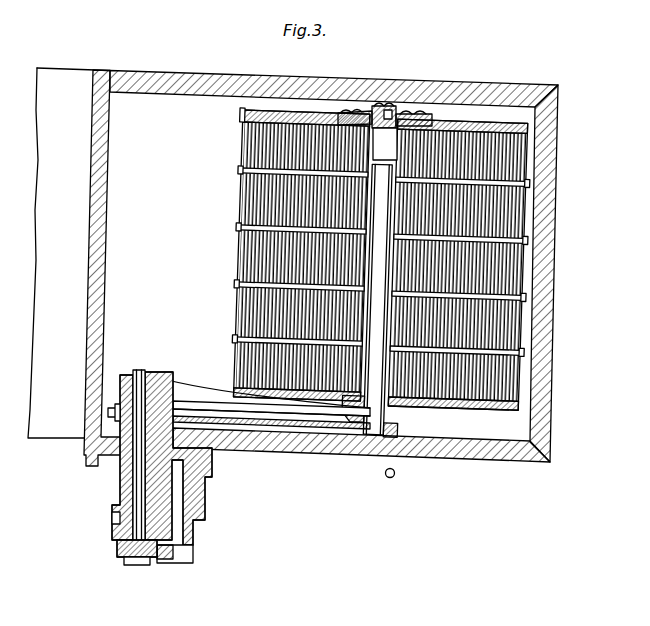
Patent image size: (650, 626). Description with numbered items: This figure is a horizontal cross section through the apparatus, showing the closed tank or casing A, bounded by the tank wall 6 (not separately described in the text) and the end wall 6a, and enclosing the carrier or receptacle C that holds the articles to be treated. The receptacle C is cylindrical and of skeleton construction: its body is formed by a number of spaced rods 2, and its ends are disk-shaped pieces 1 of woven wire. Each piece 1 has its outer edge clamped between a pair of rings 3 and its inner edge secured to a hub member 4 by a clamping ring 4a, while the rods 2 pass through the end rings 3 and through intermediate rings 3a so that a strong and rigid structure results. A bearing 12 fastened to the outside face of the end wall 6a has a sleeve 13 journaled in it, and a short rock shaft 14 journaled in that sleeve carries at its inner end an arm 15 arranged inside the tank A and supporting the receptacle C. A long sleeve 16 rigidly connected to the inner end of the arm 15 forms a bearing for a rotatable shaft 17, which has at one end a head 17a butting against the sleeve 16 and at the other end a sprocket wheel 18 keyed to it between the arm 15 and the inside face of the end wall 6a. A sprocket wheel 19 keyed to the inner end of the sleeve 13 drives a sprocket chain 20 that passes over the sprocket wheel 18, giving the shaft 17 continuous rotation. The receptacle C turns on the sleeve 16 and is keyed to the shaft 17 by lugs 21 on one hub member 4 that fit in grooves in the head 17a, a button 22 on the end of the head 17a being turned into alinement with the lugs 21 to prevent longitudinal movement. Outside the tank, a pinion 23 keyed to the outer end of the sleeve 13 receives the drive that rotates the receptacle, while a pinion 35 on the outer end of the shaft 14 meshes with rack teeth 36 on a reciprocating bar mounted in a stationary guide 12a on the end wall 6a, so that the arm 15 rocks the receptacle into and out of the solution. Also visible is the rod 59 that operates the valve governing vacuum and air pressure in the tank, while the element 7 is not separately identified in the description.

The closed tank or casing A is at (556, 272).
The top wall of casing 6 is at (487, 97).
The end wall of the tank 6a is at (462, 452).
The carrier or receptacle C is at (292, 256).
The pieces of woven wire 1 is at (283, 110).
The intermediate rings 3a is at (243, 227).
The rings 3 is at (242, 390).
The right tube section 7 is at (470, 404).
The rods 2 is at (496, 398).
The clamping ring 4a is at (420, 400).
The hub member 4 is at (380, 400).
The sprocket wheel 18 is at (368, 432).
The long sleeve 16 is at (402, 434).
The rotatable shaft 17 is at (332, 110).
The lugs 21 is at (372, 110).
The button 22 is at (392, 110).
The head of the shaft 17a is at (420, 124).
The arm 15 is at (183, 402).
The sprocket chain 20 is at (298, 436).
The bearing 12 is at (214, 462).
The stationary guide 12a is at (196, 552).
The sleeve 13 is at (115, 487).
The sprocket wheel 19 is at (112, 412).
The short rock shaft 14 is at (170, 484).
The pinion 23 is at (112, 520).
The pinion 35 is at (117, 550).
The rack teeth 36 is at (164, 565).
The rod 59 is at (389, 478).